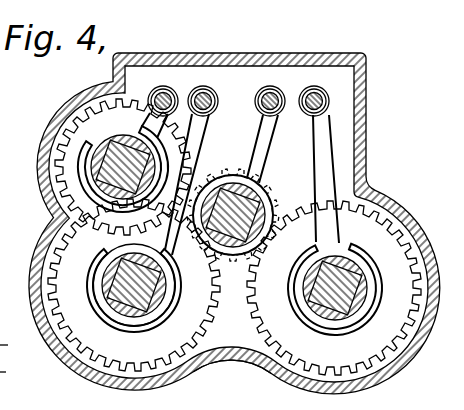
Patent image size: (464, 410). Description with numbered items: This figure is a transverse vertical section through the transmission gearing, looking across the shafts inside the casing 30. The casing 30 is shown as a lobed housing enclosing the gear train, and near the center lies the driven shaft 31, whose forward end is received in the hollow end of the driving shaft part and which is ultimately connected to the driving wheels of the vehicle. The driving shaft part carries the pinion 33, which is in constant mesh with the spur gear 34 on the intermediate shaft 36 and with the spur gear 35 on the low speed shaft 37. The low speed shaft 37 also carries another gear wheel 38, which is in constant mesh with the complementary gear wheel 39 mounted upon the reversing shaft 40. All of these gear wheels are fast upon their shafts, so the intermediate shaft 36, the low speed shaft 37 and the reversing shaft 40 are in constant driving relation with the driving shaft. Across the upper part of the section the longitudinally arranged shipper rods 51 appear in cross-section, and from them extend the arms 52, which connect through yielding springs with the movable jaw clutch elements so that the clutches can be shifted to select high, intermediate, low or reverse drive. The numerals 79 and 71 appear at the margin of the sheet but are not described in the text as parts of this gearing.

The casing 30 is at (234, 223).
The driven shaft 31 is at (264, 190).
The pinion 33 is at (238, 264).
The spur gear 34 is at (334, 288).
The spur gear 35 is at (188, 362).
The intermediate shaft 36 is at (356, 300).
The low speed shaft 37 is at (113, 310).
The gear wheel 38 is at (142, 330).
The complementary gear wheel 39 is at (62, 168).
The reversing shaft 40 is at (108, 181).
The shipper rods 51 is at (176, 95).
The arms 52 is at (318, 136).
The lead line 79 is at (13, 347).
The lead line 71 is at (12, 374).